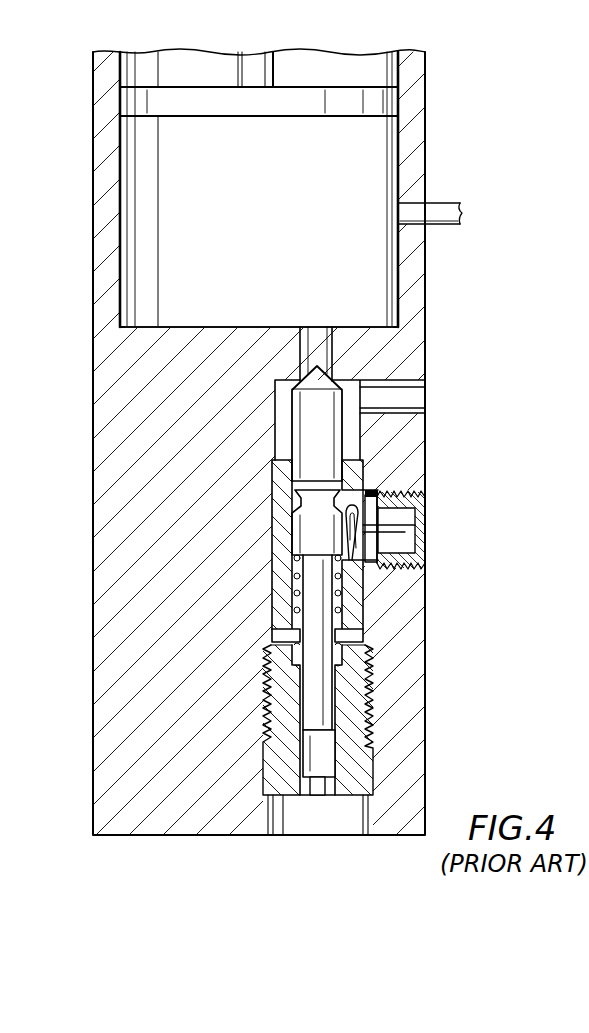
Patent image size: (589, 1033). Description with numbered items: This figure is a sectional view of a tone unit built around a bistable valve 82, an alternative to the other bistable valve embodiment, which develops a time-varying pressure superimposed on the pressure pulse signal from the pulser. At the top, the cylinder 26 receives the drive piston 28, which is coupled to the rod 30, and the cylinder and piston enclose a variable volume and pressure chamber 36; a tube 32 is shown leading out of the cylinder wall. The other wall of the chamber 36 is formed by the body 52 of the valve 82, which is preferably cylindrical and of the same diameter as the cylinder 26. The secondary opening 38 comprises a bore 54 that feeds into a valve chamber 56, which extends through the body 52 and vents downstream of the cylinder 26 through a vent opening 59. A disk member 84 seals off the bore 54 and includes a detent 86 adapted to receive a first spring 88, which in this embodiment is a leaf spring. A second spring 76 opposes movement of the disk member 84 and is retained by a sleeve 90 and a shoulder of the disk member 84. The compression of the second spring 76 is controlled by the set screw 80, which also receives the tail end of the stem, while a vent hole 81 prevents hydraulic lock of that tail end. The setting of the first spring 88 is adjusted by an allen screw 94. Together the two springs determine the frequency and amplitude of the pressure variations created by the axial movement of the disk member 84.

The cylinder 26 is at (95, 199).
The drive piston 28 is at (388, 102).
The rod 30 is at (240, 68).
The port tube 32 is at (443, 203).
The variable volume and pressure chamber 36 is at (268, 226).
The secondary opening 38 is at (320, 336).
The body 52 is at (108, 787).
The bore 54 is at (330, 348).
The valve chamber 56 is at (352, 442).
The vent opening 59 is at (415, 395).
The second spring 76 is at (290, 600).
The set screw 80 is at (291, 785).
The vent hole 81 is at (322, 785).
The valve 82 is at (58, 538).
The disk member 84 is at (325, 408).
The detent 86 is at (346, 486).
The first spring 88 is at (370, 542).
The sleeve 90 is at (282, 473).
The allen screw 94 is at (427, 500).